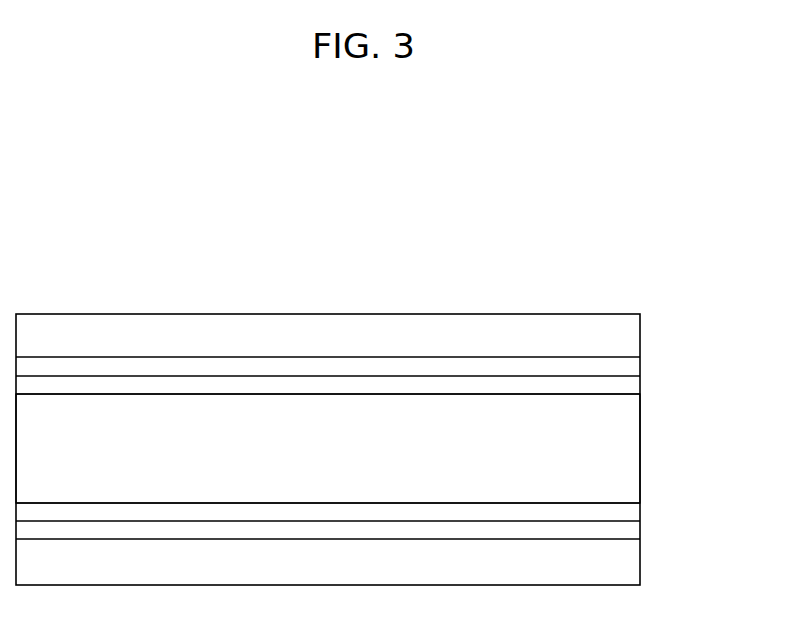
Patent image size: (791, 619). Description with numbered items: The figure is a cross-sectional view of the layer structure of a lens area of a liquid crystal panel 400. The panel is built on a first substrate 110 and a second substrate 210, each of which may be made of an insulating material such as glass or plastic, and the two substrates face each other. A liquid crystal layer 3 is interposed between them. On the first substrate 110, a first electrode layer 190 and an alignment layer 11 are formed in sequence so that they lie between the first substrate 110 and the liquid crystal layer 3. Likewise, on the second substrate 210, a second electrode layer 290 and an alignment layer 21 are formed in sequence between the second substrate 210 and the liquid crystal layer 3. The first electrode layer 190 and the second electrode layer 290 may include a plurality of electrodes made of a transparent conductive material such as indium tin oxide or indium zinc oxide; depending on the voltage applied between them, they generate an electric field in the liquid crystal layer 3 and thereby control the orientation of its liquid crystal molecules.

The liquid crystal panel 400 is at (342, 226).
The second substrate 210 is at (633, 334).
The second electrode layer 290 is at (633, 368).
The alignment layer 21 is at (628, 385).
The liquid crystal layer 3 is at (628, 449).
The alignment layer 11 is at (628, 511).
The first electrode layer 190 is at (633, 530).
The first substrate 110 is at (633, 564).